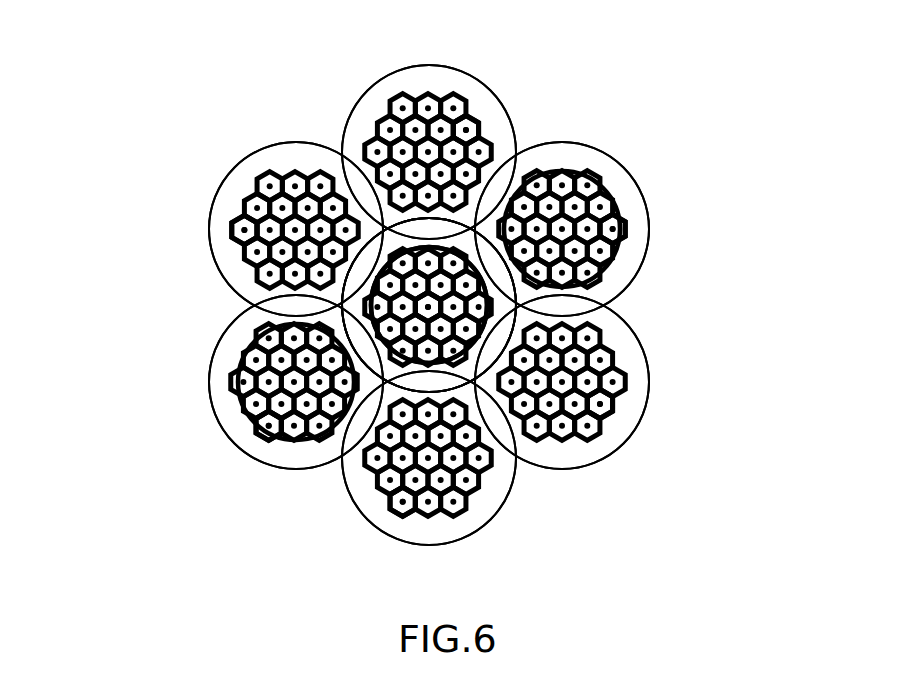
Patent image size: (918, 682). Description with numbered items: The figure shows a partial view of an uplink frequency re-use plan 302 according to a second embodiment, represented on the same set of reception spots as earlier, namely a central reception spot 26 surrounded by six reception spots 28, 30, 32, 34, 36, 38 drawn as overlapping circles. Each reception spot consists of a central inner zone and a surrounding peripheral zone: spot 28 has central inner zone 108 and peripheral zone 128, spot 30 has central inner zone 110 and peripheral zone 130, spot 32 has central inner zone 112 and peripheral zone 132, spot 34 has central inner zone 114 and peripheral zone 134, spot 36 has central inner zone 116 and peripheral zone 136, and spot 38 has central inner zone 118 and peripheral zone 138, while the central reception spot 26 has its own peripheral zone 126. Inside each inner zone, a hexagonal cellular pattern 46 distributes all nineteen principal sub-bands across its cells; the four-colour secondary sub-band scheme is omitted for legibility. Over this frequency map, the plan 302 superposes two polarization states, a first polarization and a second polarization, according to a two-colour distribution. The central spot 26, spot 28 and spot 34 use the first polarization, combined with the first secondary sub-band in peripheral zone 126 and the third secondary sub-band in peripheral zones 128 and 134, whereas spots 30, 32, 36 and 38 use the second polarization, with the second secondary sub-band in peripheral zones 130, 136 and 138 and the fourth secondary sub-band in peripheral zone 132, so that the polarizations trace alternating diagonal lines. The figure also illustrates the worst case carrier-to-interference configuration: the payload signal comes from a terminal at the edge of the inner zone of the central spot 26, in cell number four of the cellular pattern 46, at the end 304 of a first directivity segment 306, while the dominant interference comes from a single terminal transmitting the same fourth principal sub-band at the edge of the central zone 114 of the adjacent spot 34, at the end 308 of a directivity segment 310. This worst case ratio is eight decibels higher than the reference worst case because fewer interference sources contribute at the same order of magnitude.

The uplink frequency re-use plan 302 is at (135, 85).
The central reception spot 26 is at (490, 398).
The reception spot 28 is at (217, 430).
The reception spot 30 is at (212, 268).
The reception spot 32 is at (418, 65).
The reception spot 34 is at (605, 150).
The reception spot 36 is at (595, 468).
The reception spot 38 is at (480, 533).
The cellular pattern 46 is at (243, 220).
The central inner zone 108 is at (265, 382).
The central inner zone 110 is at (272, 180).
The central inner zone 112 is at (395, 128).
The central inner zone 114 is at (582, 180).
The central inner zone 116 is at (605, 382).
The central inner zone 118 is at (377, 480).
The peripheral zone 126 is at (455, 240).
The peripheral zone 128 is at (260, 443).
The peripheral zone 130 is at (217, 247).
The peripheral zone 132 is at (392, 85).
The peripheral zone 134 is at (575, 155).
The peripheral zone 136 is at (622, 345).
The peripheral zone 138 is at (455, 546).
The end of first directivity segment 304 is at (372, 294).
The first directivity segment 306 is at (345, 437).
The end of directivity segment 308 is at (428, 303).
The directivity segment 310 is at (520, 306).